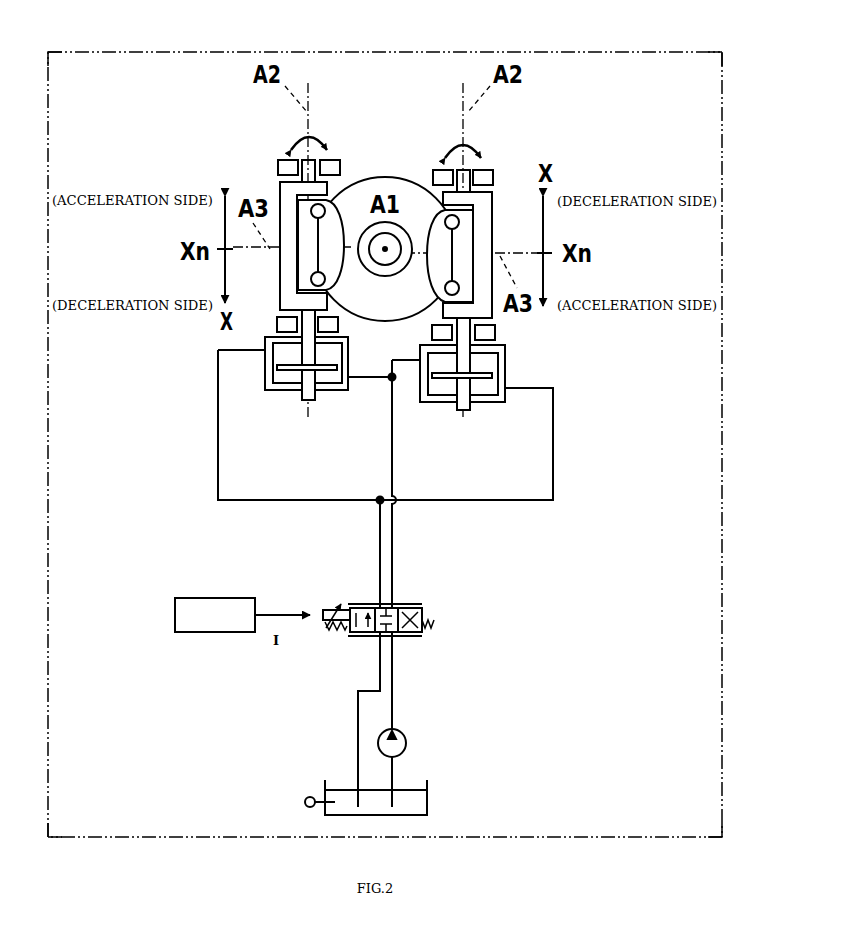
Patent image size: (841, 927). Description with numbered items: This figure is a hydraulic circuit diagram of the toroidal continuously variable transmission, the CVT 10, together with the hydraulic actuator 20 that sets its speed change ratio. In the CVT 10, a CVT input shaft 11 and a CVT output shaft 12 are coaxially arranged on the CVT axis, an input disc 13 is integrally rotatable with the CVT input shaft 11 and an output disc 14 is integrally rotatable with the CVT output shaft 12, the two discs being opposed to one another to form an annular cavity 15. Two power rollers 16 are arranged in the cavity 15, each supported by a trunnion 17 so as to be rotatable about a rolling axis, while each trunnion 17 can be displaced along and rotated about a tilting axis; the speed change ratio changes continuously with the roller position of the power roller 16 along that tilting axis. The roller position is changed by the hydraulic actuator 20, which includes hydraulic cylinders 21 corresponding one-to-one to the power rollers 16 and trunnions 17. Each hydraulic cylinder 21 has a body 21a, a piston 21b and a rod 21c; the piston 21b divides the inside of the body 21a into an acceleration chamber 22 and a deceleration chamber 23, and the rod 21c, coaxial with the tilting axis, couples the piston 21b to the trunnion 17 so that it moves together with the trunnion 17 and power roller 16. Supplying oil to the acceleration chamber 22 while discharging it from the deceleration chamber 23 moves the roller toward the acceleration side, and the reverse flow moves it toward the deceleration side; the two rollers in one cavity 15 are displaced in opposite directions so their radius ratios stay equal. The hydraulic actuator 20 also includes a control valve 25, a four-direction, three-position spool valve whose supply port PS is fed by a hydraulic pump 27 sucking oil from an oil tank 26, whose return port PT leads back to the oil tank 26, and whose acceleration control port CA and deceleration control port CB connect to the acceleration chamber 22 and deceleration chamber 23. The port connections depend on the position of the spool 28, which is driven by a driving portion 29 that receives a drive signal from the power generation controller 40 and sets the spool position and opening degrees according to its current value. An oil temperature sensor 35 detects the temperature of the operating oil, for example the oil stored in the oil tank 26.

The CVT 10 is at (497, 127).
The CVT input shaft 11 is at (400, 263).
The CVT output shaft 12 is at (394, 272).
The input disc 13 is at (392, 187).
The output disc 14 is at (385, 249).
The annular cavity 15 is at (385, 249).
The power roller 16 is at (360, 191).
The trunnion 17 is at (280, 195).
The hydraulic actuator 20 is at (188, 525).
The hydraulic cylinder 21 is at (260, 368).
The body 21a is at (276, 336).
The piston 21b is at (323, 372).
The rod 21c is at (305, 403).
The acceleration chamber 22 is at (290, 378).
The deceleration chamber 23 is at (333, 353).
The control valve 25 is at (427, 612).
The oil tank 26 is at (427, 800).
The hydraulic pump 27 is at (406, 738).
The spool 28 is at (347, 633).
The driving portion 29 is at (322, 606).
The oil temperature sensor 35 is at (305, 802).
The power generation controller 40 is at (242, 615).